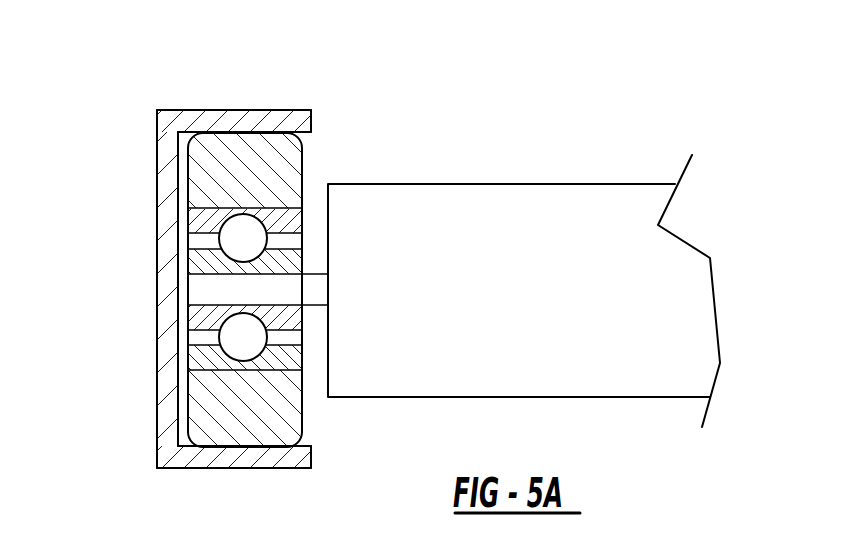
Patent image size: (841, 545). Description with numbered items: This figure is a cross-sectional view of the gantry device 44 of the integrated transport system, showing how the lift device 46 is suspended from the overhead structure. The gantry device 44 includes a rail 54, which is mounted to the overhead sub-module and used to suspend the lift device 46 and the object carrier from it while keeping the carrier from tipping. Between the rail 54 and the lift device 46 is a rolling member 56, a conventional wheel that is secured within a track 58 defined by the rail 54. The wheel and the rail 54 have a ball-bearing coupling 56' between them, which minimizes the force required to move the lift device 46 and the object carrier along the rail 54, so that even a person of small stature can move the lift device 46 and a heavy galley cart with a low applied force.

The gantry device 44 is at (280, 110).
The lift device 46 is at (555, 183).
The rail 54 is at (158, 111).
The rolling member 56 is at (285, 270).
The ball-bearing coupling 56' is at (308, 192).
The track 58 is at (308, 445).